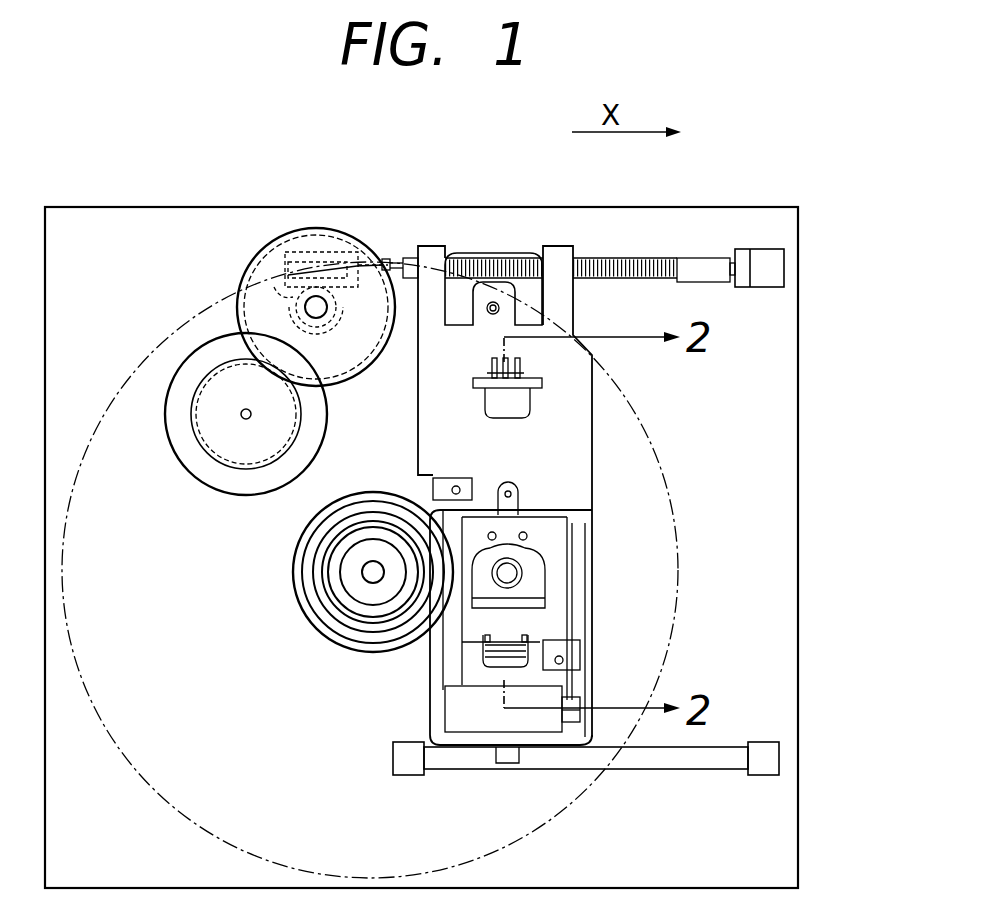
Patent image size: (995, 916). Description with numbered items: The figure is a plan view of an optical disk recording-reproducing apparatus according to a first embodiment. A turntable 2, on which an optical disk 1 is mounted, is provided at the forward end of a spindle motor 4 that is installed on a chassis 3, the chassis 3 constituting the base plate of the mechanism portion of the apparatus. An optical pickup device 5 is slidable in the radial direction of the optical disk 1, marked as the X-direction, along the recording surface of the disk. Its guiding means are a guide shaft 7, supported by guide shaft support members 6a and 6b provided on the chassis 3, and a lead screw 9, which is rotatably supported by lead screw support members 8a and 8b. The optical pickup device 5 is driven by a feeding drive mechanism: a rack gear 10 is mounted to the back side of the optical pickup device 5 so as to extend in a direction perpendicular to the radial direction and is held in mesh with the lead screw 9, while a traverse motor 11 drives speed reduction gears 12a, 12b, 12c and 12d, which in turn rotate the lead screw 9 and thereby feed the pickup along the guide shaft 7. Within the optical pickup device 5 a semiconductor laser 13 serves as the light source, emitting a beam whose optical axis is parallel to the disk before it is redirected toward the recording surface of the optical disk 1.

The optical disk 1 is at (128, 770).
The turntable 2 is at (298, 585).
The chassis 3 is at (798, 428).
The spindle motor 4 is at (372, 653).
The optical pickup device 5 is at (573, 297).
The guide shaft support member 6a is at (765, 775).
The guide shaft support member 6b is at (407, 775).
The guide shaft 7 is at (655, 769).
The lead screw support member 8a is at (765, 280).
The lead screw support member 8b is at (385, 258).
The lead screw 9 is at (636, 258).
The rack gear 10 is at (499, 253).
The traverse motor 11 is at (188, 452).
The speed reduction gear 12a is at (198, 385).
The speed reduction gear 12b is at (285, 288).
The speed reduction gear 12c is at (274, 287).
The speed reduction gear 12d is at (318, 255).
The semiconductor laser 13 is at (517, 410).